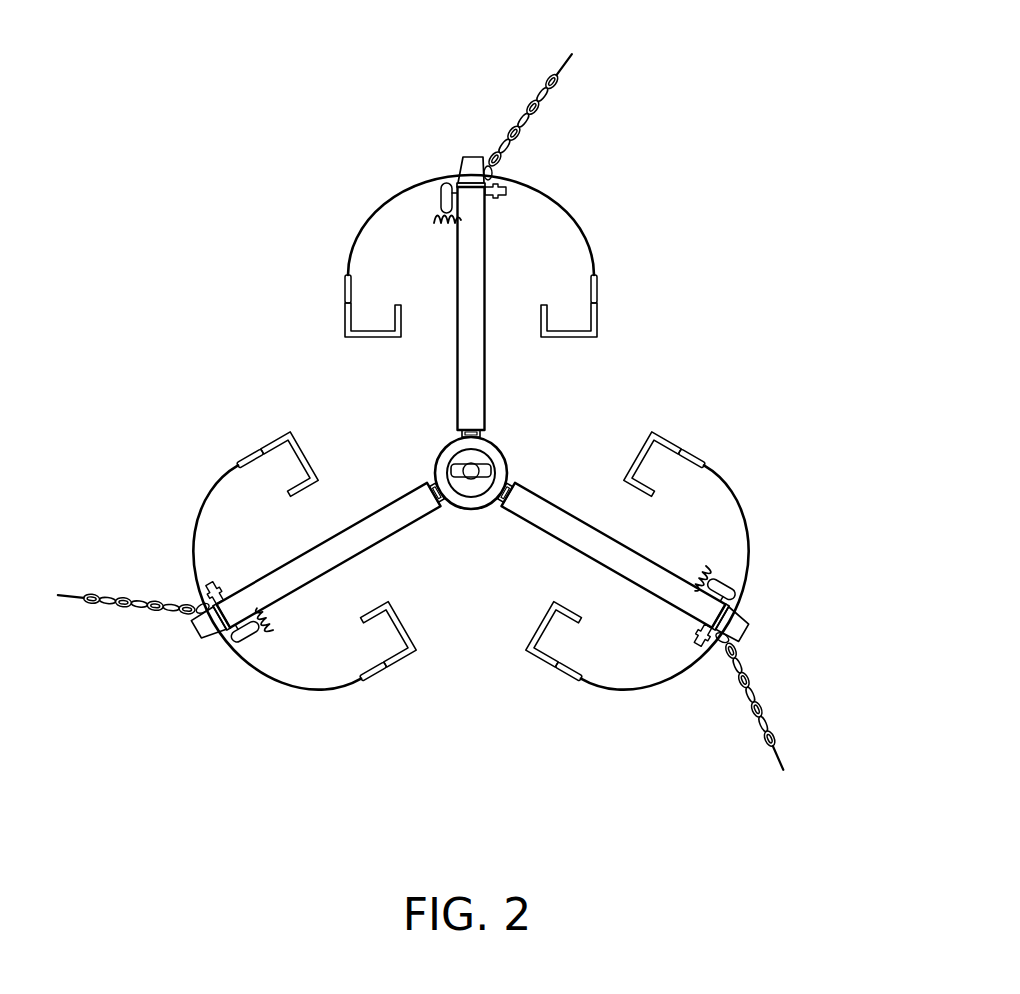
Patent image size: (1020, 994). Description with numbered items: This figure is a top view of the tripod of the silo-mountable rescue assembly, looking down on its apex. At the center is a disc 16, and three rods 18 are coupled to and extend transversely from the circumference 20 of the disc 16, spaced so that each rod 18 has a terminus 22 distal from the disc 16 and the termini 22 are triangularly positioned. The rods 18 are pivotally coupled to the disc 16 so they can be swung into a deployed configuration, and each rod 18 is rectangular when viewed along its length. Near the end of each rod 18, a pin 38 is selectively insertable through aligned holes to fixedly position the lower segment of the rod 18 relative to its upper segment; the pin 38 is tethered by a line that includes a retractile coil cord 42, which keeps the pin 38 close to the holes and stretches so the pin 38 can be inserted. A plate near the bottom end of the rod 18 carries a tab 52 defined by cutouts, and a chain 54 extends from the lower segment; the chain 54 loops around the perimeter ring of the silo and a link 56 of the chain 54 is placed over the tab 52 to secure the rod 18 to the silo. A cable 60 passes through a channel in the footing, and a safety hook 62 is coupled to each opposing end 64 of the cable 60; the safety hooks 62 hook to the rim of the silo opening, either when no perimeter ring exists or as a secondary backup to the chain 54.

The disc 16 is at (498, 463).
The rod 18 is at (527, 522).
The circumference 20 is at (503, 446).
The terminus 22 is at (468, 182).
The pin 38 is at (258, 627).
The retractile coil cord 42 is at (280, 617).
The tab 52 is at (198, 512).
The chain 54 is at (770, 695).
The link 56 is at (92, 592).
The cable 60 is at (566, 205).
The safety hook 62 is at (383, 337).
The opposing end 64 is at (700, 462).